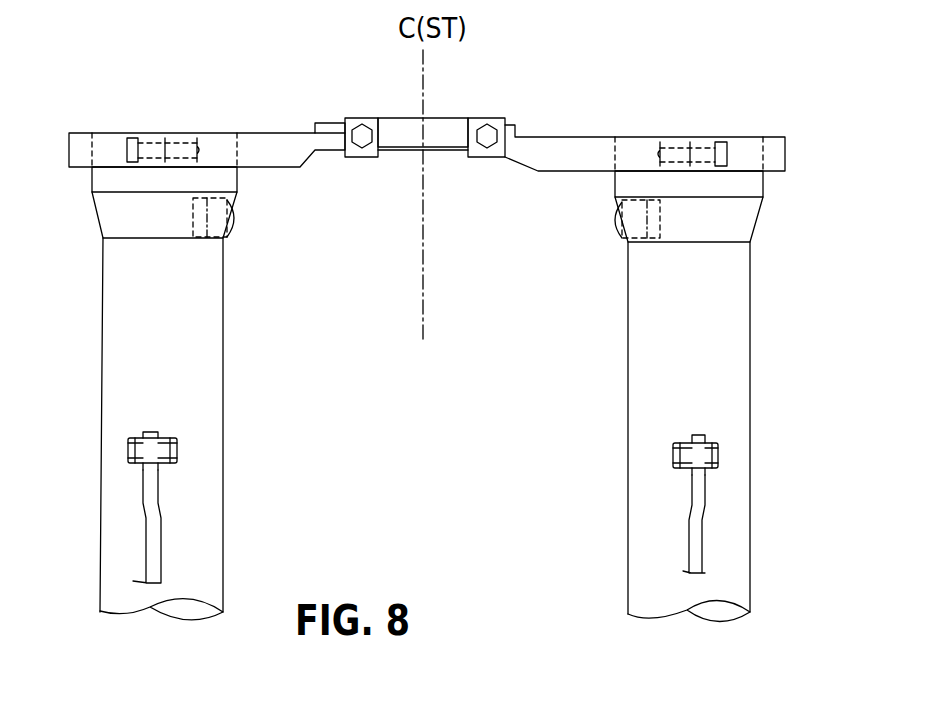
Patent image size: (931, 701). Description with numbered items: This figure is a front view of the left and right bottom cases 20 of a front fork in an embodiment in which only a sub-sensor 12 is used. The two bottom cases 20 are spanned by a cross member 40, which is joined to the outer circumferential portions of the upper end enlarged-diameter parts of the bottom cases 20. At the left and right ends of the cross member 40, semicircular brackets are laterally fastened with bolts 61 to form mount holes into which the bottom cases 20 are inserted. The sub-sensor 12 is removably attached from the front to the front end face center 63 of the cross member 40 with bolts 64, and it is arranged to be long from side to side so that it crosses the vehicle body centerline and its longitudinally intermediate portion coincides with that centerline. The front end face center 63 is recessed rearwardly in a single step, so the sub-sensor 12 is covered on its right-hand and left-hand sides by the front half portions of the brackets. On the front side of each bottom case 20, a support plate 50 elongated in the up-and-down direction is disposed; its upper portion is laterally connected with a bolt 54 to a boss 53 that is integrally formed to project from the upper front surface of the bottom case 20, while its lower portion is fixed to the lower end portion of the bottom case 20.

The sub-sensor 12 is at (447, 127).
The bottom case 20 is at (115, 342).
The cross member 40 is at (277, 117).
The support plate 50 is at (143, 537).
The boss 53 is at (177, 463).
The bolt 54 is at (128, 450).
The bolt 61 is at (122, 133).
The front end face center 63 is at (515, 132).
The bolt 64 is at (357, 123).